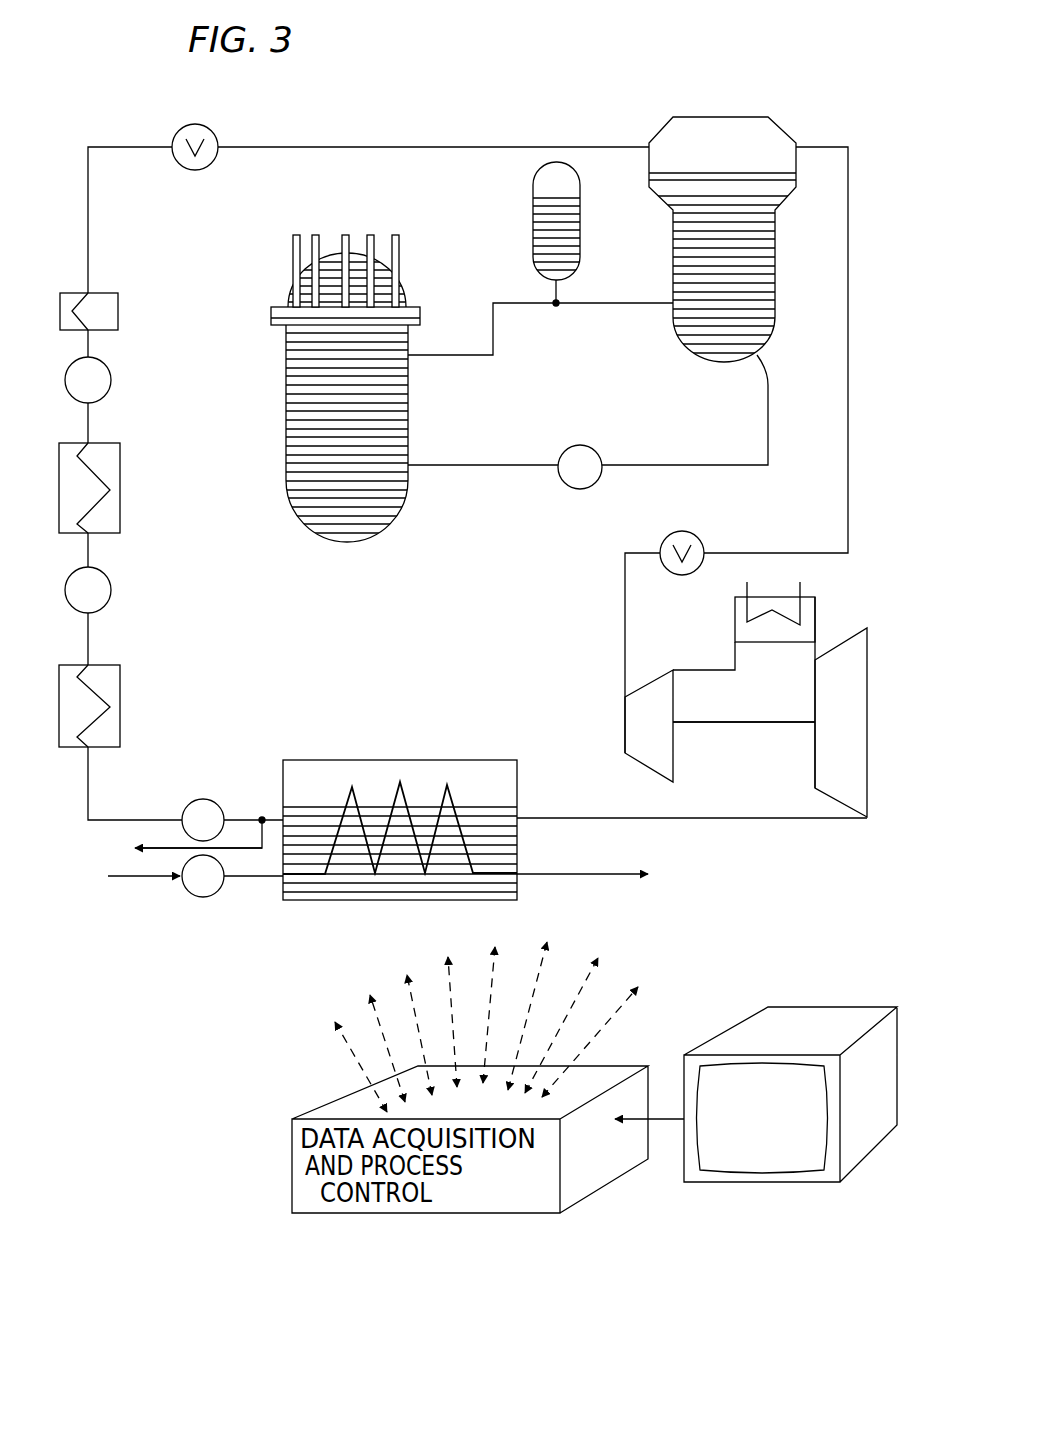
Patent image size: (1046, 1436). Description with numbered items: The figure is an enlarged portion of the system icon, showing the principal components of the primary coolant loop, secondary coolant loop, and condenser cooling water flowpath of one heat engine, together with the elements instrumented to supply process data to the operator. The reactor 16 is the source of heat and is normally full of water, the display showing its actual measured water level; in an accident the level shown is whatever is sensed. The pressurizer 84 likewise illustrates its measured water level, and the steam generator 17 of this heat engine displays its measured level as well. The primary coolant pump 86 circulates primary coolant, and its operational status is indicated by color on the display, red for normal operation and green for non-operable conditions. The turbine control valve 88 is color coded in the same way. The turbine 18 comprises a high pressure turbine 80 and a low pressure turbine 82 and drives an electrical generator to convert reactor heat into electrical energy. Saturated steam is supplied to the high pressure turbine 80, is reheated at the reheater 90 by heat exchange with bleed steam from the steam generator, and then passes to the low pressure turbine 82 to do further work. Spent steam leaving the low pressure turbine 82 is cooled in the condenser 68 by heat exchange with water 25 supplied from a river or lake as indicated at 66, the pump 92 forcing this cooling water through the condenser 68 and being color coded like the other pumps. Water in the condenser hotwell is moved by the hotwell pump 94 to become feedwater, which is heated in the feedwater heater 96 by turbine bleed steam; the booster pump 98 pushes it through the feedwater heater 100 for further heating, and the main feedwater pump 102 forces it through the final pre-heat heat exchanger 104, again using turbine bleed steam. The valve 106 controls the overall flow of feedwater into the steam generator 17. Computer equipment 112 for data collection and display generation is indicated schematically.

The reactor 16 is at (347, 542).
The steam generator 17 is at (673, 250).
The turbine 18 is at (748, 785).
The water 25 is at (122, 875).
The cooling water supply indication 66 is at (567, 880).
The condenser 68 is at (410, 760).
The high pressure turbine 80 is at (625, 723).
The low pressure turbine 82 is at (867, 706).
The pressurizer 84 is at (533, 225).
The primary coolant pump 86 is at (590, 447).
The turbine control valve 88 is at (700, 536).
The reheater 90 is at (815, 609).
The pump 92 is at (200, 897).
The hotwell pump 94 is at (212, 800).
The feedwater heater 96 is at (120, 697).
The booster pump 98 is at (111, 591).
The feedwater heater 100 is at (120, 486).
The main feedwater pump 102 is at (111, 381).
The final pre-heat heat exchanger 104 is at (118, 312).
The valve 106 is at (210, 131).
The computer equipment 112 is at (767, 1182).